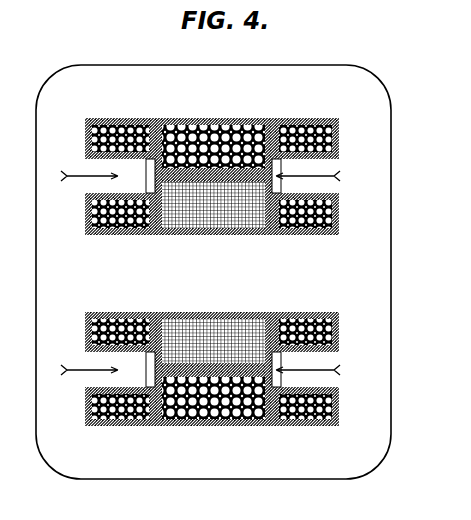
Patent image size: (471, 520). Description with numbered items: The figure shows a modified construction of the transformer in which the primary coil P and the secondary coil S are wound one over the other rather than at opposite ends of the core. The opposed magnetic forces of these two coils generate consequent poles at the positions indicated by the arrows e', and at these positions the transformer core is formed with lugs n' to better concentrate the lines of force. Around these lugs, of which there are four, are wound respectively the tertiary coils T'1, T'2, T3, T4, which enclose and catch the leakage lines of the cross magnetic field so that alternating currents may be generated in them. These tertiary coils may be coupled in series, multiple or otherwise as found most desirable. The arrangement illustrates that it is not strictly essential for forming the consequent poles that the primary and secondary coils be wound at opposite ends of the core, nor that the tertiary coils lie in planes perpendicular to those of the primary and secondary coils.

The tertiary coil T3 is at (127, 117).
The tertiary coil T4 is at (315, 117).
The tertiary coil T'1 is at (120, 372).
The tertiary coil T'2 is at (305, 372).
The secondary coil S is at (218, 117).
The primary coil P is at (228, 236).
The arrows indicating consequent poles e' is at (200, 265).
The lugs n' is at (216, 283).